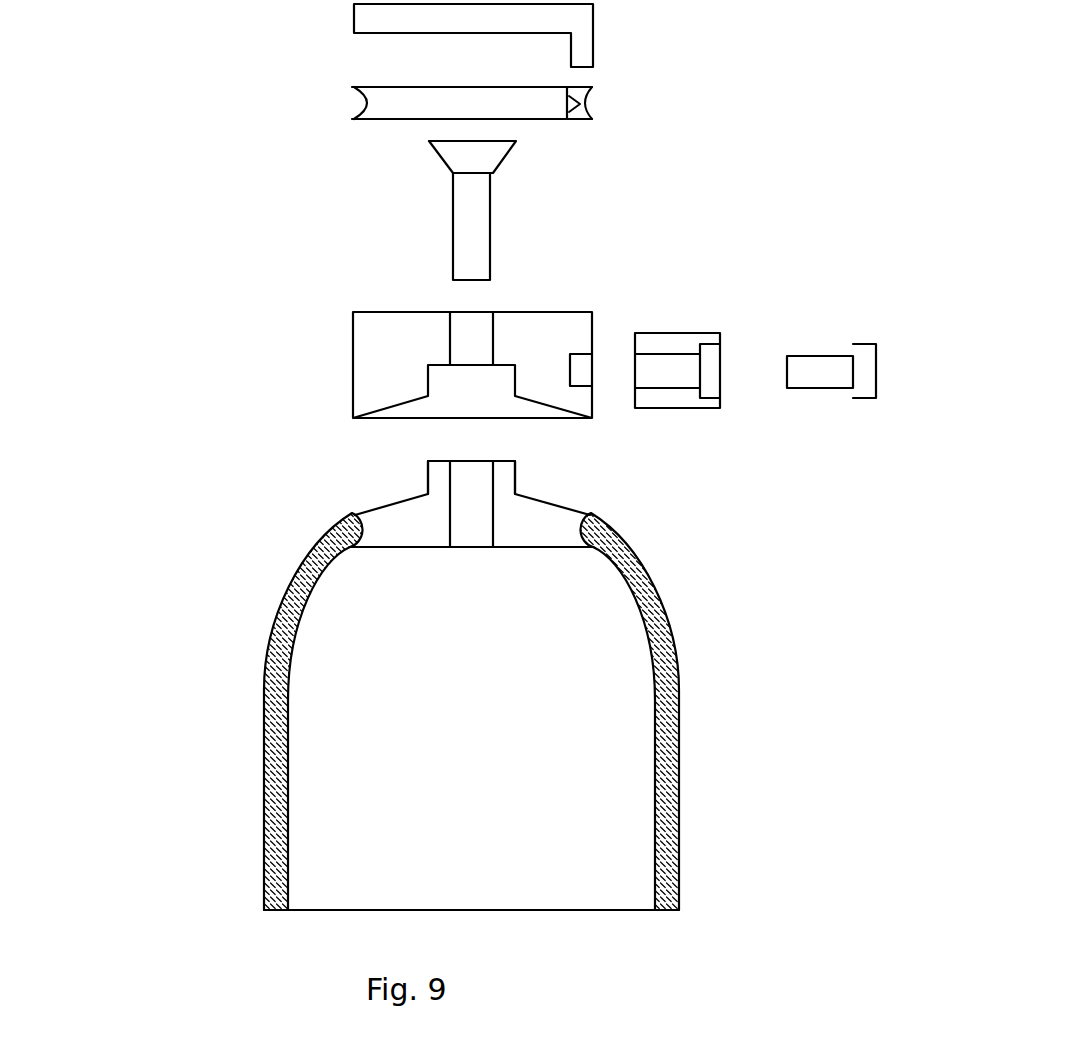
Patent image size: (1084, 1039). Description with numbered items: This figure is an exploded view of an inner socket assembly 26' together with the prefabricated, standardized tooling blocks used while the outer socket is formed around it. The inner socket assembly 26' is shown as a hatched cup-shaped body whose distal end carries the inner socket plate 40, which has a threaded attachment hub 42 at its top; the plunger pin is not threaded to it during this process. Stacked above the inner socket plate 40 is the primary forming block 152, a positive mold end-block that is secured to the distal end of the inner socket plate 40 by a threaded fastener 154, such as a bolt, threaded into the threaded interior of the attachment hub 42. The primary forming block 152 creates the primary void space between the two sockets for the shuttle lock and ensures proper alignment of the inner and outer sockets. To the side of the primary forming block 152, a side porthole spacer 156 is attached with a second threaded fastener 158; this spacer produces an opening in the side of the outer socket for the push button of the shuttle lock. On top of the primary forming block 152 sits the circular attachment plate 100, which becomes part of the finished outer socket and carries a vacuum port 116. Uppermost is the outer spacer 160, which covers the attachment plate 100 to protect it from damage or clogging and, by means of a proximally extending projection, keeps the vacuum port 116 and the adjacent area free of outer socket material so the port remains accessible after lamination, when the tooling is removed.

The outer spacer 160 is at (594, 17).
The attachment plate 100 is at (408, 99).
The vacuum port 116 is at (583, 106).
The threaded fastener 154 is at (473, 226).
The primary forming block 152 is at (364, 343).
The side porthole spacer 156 is at (667, 343).
The threaded fastener 158 is at (820, 377).
The inner socket plate 40 is at (536, 515).
The attachment hub 42 is at (432, 476).
The inner socket assembly 26' is at (550, 711).